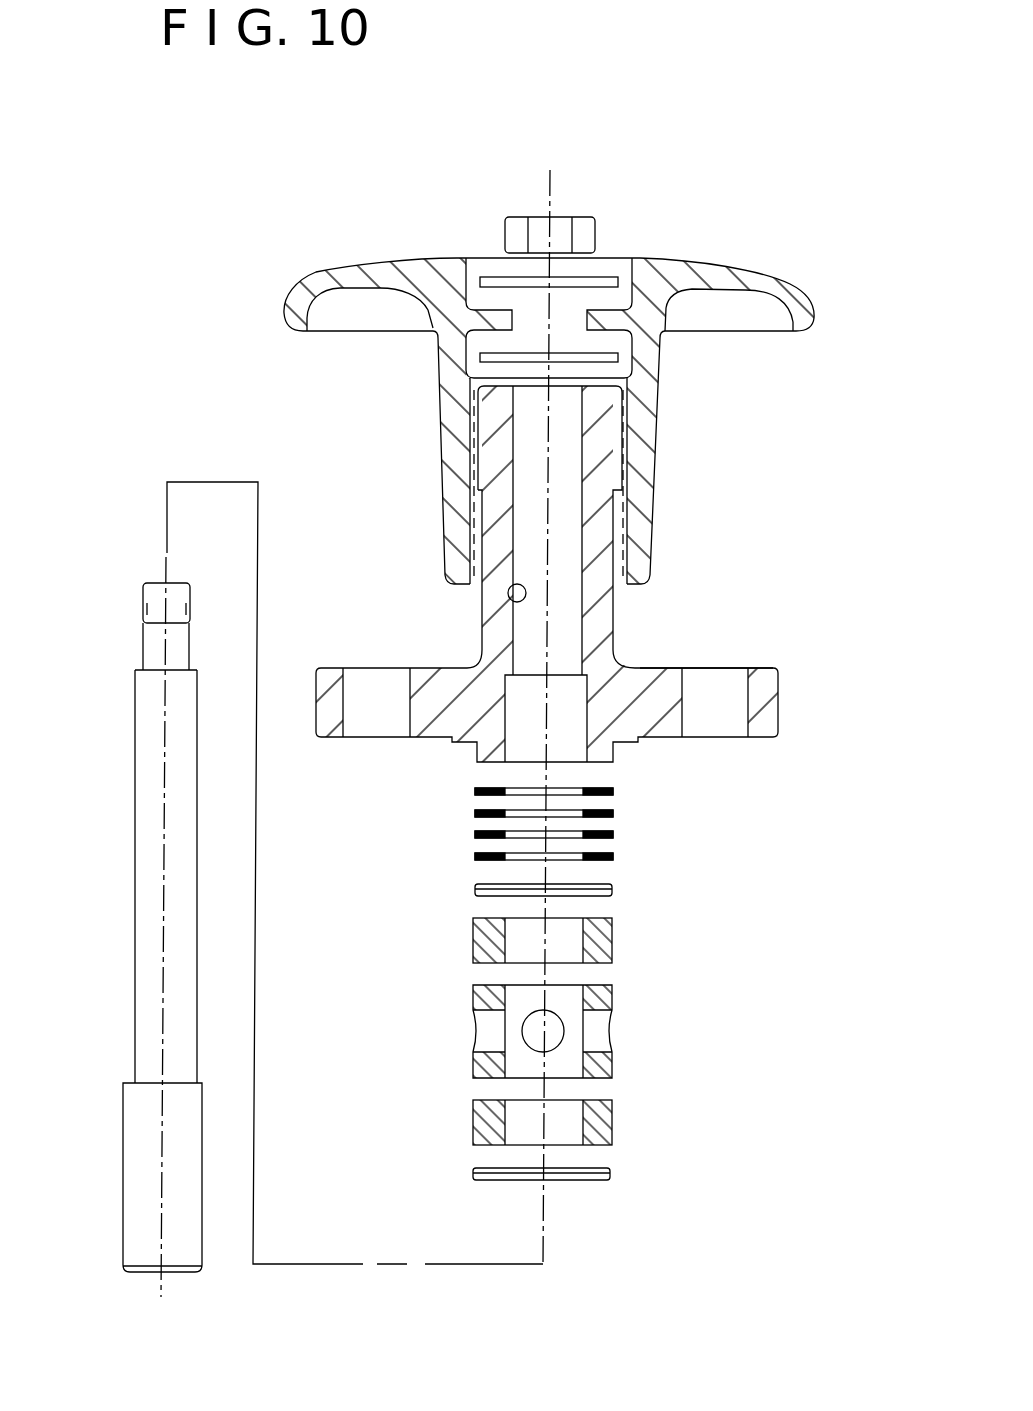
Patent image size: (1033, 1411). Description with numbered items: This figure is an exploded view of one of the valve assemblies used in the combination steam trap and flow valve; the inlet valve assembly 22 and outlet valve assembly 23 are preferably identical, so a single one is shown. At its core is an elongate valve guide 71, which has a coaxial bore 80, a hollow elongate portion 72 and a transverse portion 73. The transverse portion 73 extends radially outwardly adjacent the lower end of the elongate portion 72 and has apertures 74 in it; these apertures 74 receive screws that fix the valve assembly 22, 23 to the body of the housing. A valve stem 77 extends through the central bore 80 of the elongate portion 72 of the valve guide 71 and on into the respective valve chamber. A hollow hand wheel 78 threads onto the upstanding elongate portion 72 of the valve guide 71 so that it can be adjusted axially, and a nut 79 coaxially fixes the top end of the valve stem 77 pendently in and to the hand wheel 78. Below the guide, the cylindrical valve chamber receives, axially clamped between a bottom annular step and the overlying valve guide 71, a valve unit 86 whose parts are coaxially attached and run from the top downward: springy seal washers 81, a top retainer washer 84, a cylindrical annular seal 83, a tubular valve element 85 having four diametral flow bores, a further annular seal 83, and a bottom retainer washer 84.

The inlet valve assembly 22 is at (317, 717).
The outlet valve assembly 23 is at (285, 388).
The valve guide 71 is at (627, 663).
The hollow elongate portion 72 is at (598, 592).
The transverse portion 73 is at (668, 670).
The apertures 74 is at (410, 686).
The valve stem 77 is at (135, 690).
The hand wheel 78 is at (787, 276).
The nut 79 is at (585, 223).
The coaxial bore 80 is at (510, 597).
The springy seal washers 81 is at (613, 792).
The cylindrical annular seal 83 is at (605, 945).
The retainer washer 84 is at (612, 890).
The tubular valve element 85 is at (607, 998).
The valve unit 86 is at (797, 917).